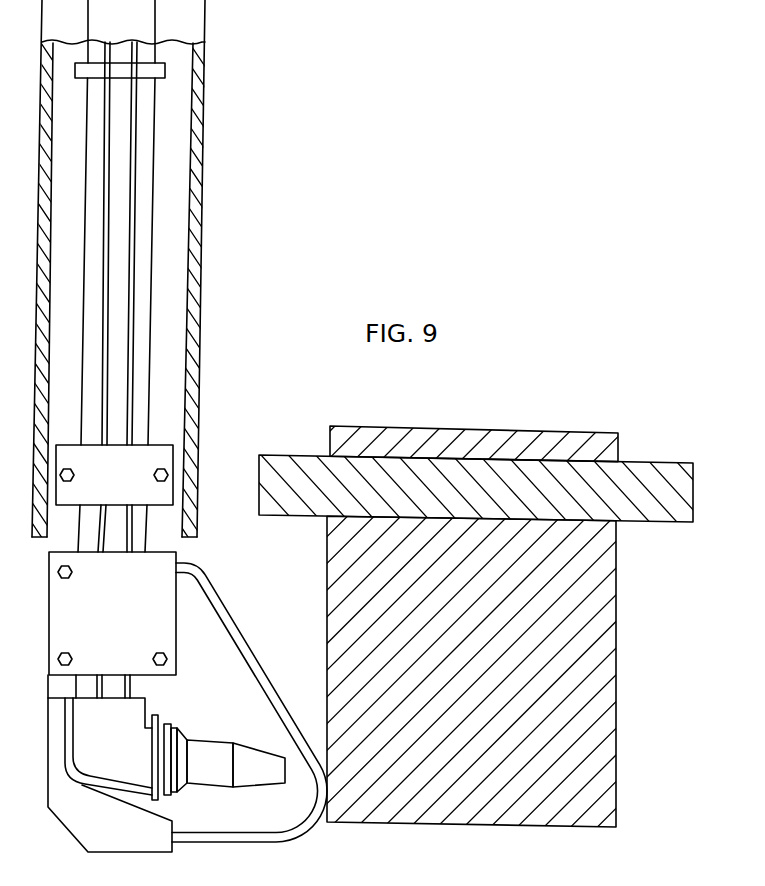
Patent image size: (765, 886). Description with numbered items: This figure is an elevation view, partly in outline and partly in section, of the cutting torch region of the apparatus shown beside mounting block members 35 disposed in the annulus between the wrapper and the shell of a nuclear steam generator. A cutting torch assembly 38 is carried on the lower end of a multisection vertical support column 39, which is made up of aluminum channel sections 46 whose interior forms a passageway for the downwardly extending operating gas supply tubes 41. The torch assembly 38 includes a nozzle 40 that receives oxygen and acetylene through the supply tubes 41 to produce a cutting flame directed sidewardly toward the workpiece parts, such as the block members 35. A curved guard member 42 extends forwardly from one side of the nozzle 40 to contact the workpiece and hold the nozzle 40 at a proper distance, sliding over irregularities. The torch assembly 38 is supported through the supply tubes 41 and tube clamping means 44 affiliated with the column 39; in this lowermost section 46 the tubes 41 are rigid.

The block members 35 is at (585, 450).
The cutting torch assembly 38 is at (208, 697).
The multisection vertical support column 39 is at (202, 217).
The nozzle 40 is at (213, 750).
The supply tubes 41 is at (142, 400).
The guard member 42 is at (282, 838).
The tube clamping means 44 is at (152, 458).
The channel sections 46 is at (197, 125).